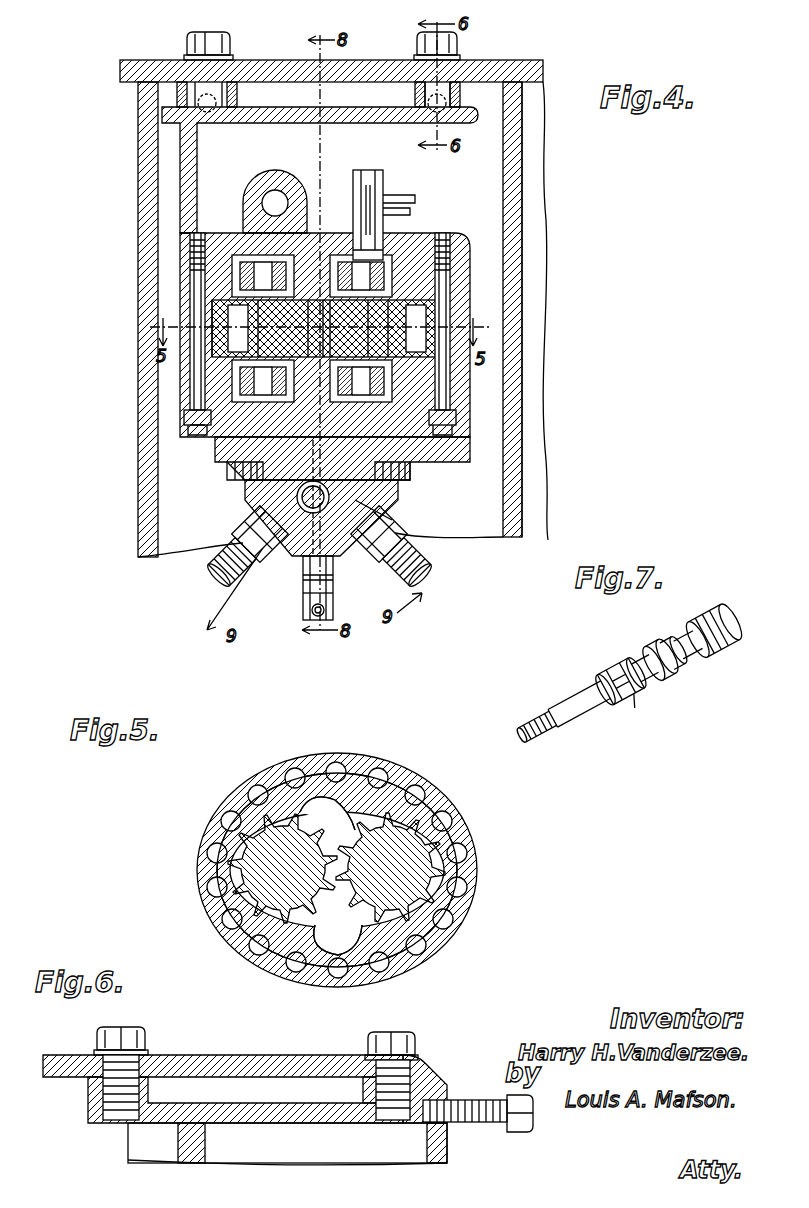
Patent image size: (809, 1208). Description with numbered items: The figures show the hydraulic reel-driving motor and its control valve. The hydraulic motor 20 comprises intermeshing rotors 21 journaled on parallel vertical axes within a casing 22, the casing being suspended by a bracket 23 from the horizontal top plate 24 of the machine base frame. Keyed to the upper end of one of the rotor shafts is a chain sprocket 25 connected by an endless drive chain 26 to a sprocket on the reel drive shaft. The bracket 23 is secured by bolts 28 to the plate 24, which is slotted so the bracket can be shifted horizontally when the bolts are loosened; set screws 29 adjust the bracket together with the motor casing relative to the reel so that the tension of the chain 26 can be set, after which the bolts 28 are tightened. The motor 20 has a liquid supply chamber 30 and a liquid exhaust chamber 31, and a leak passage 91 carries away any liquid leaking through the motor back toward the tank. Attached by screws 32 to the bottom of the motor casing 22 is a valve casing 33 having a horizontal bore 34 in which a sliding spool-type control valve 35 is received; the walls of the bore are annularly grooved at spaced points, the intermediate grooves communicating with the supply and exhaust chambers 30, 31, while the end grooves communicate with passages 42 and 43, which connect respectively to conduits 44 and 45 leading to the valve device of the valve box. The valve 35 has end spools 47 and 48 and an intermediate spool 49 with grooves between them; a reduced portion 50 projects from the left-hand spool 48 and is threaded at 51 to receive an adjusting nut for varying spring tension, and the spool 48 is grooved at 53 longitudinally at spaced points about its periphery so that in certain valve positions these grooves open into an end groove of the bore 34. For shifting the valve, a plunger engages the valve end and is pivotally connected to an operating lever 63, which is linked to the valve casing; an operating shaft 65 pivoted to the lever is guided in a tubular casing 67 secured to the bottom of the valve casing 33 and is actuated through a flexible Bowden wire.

In FIG. 4, the hydraulic motor 20 is at (480, 283).
In FIG. 5, the hydraulic motor 20 is at (425, 800).
In FIG. 4, the intermeshing rotors 21 is at (412, 335).
In FIG. 5, the intermeshing rotors 21 is at (358, 832).
In FIG. 4, the casing 22 is at (190, 300).
In FIG. 5, the casing 22 is at (458, 832).
In FIG. 4, the bracket 23 is at (182, 152).
In FIG. 6, the bracket 23 is at (120, 1123).
In FIG. 4, the top plate 24 is at (496, 61).
In FIG. 6, the top plate 24 is at (258, 1068).
In FIG. 4, the chain sprocket 25 is at (402, 197).
In FIG. 4, the endless drive chain 26 is at (360, 190).
In FIG. 4, the bolts 28 is at (190, 44).
In FIG. 6, the bolts 28 is at (145, 1045).
In FIG. 4, the set screws 29 is at (222, 102).
In FIG. 6, the set screws 29 is at (478, 1098).
In FIG. 5, the liquid supply chamber 30 is at (328, 795).
In FIG. 5, the liquid exhaust chamber 31 is at (340, 945).
In FIG. 4, the screws 32 is at (235, 480).
In FIG. 4, the valve casing 33 is at (250, 528).
In FIG. 4, the horizontal bore 34 is at (360, 497).
In FIG. 4, the control valve 35 is at (297, 497).
In FIG. 7, the control valve 35 is at (618, 665).
In FIG. 4, the passage 42 is at (390, 527).
In FIG. 4, the passage 43 is at (258, 546).
In FIG. 4, the conduit 44 is at (393, 562).
In FIG. 4, the conduit 45 is at (238, 580).
In FIG. 7, the end spool 47 is at (693, 628).
In FIG. 7, the end spool 48 is at (601, 749).
In FIG. 7, the intermediate spool 49 is at (632, 656).
In FIG. 7, the reduced portion 50 is at (548, 700).
In FIG. 7, the threaded portion 51 is at (518, 724).
In FIG. 7, the longitudinal grooves 53 is at (578, 678).
In FIG. 4, the operating lever 63 is at (302, 600).
In FIG. 4, the operating shaft 65 is at (310, 615).
In FIG. 4, the tubular casing 67 is at (326, 611).
In FIG. 4, the leak passage 91 is at (279, 197).